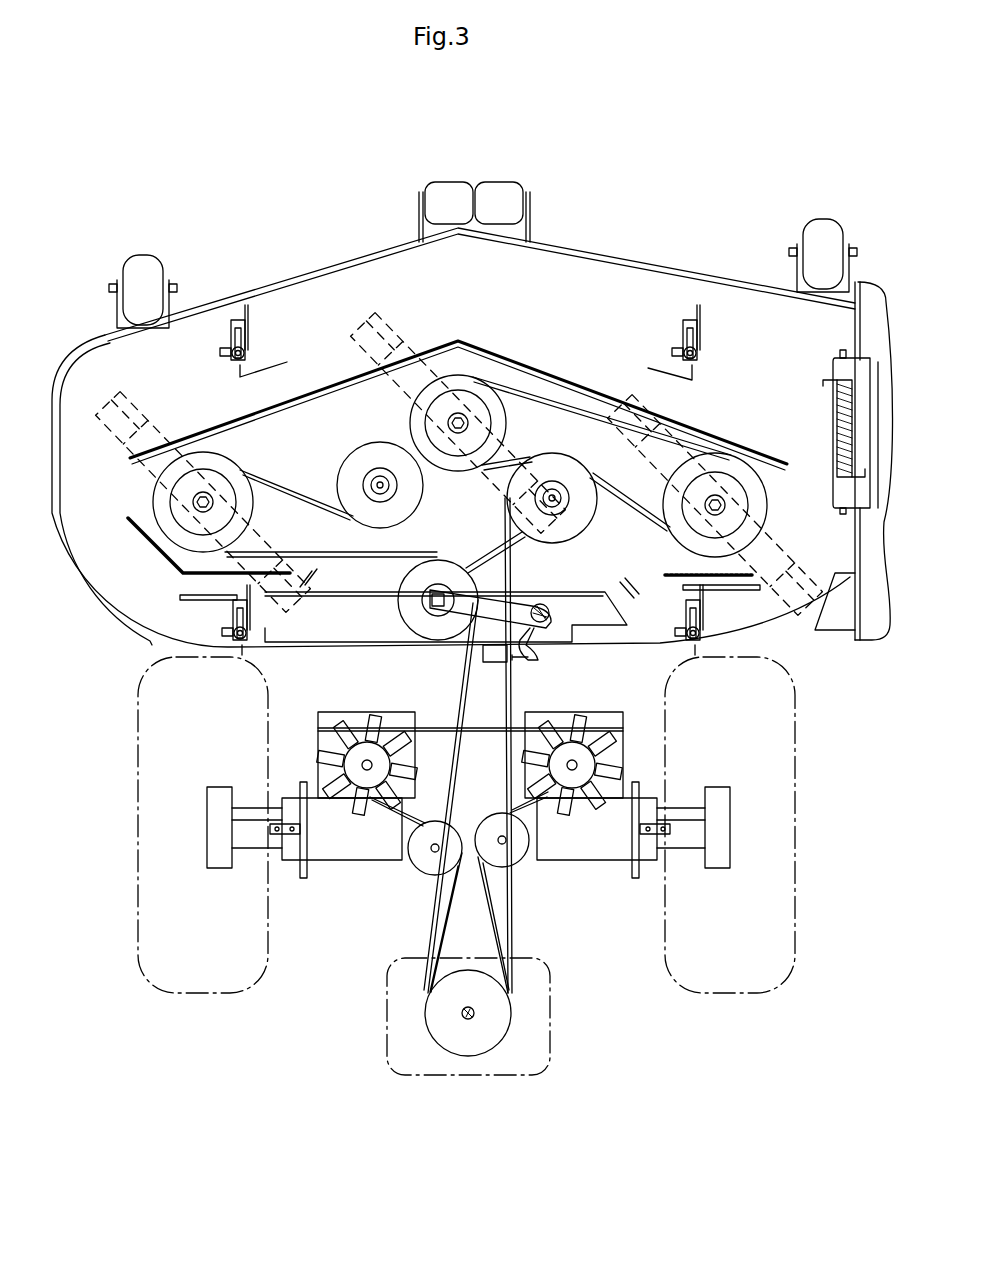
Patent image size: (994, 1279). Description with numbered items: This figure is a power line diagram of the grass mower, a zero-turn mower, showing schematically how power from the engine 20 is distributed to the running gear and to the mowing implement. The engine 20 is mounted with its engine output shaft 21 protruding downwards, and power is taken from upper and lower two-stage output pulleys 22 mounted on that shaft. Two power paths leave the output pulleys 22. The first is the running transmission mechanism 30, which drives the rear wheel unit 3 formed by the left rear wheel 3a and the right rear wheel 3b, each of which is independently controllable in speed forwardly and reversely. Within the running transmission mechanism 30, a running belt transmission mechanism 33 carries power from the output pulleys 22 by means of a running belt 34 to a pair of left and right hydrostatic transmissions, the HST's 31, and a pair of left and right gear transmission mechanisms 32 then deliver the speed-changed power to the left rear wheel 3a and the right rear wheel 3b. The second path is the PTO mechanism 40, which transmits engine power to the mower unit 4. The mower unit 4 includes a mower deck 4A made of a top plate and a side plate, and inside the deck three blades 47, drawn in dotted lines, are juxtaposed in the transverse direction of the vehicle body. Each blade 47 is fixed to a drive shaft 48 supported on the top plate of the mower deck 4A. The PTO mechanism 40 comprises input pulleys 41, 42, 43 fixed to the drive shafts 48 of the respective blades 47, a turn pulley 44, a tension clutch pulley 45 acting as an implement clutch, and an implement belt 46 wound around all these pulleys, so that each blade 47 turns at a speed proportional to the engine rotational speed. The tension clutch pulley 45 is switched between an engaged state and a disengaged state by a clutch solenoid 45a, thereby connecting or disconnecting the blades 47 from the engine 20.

The mower unit 4 is at (296, 265).
The mower deck 4A is at (630, 278).
The blade 47 is at (140, 395).
The input pulley 41 is at (178, 508).
The input pulley 42 is at (483, 385).
The input pulley 43 is at (730, 465).
The drive shaft 48 is at (210, 500).
The turn pulley 44 is at (408, 502).
The implement belt 46 is at (300, 490).
The tension clutch pulley 45 is at (410, 605).
The clutch solenoid 45a is at (493, 683).
The PTO mechanism 40 is at (516, 692).
The running belt 34 is at (443, 720).
The running transmission mechanism 30 is at (408, 822).
The HST 31 is at (357, 712).
The gear transmission mechanism 32 is at (340, 858).
The running belt transmission mechanism 33 is at (648, 745).
The rear wheel unit 3 is at (477, 825).
The left rear wheel 3a is at (138, 840).
The right rear wheel 3b is at (795, 860).
The engine 20 is at (478, 1077).
The engine output shaft 21 is at (462, 1013).
The output pulley 22 is at (494, 1020).